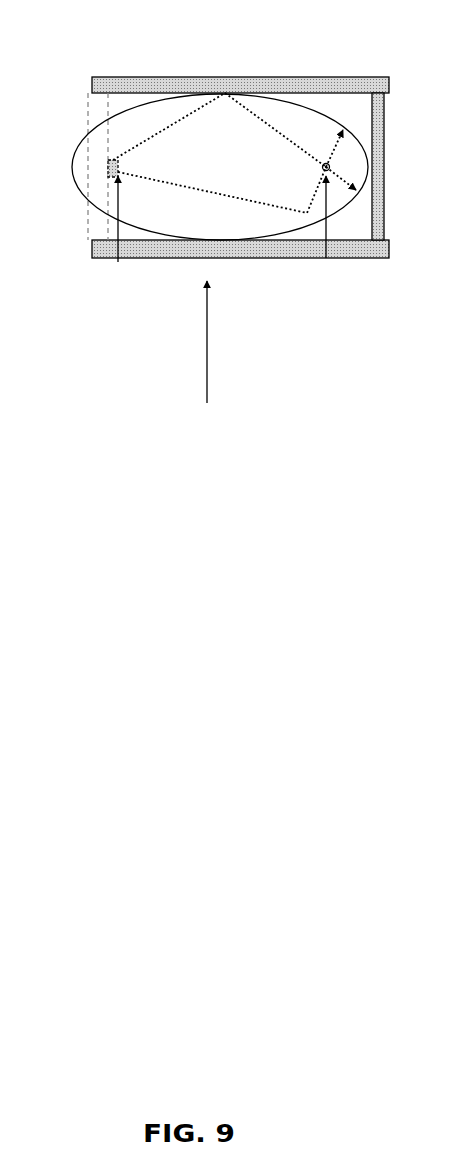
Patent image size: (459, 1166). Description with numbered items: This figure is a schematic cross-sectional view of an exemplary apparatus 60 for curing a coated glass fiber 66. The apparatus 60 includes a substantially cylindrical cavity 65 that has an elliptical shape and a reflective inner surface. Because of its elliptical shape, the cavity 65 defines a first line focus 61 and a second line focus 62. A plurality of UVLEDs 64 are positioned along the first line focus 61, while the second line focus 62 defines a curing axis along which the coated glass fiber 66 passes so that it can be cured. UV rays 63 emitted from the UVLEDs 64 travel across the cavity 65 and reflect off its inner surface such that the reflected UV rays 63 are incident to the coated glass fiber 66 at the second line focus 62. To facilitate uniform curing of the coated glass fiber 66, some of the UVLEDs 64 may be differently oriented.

The apparatus 60 is at (198, 356).
The first line focus 61 is at (107, 233).
The second line focus 62 is at (318, 234).
The UV rays 63 is at (196, 110).
The UVLEDs 64 is at (104, 168).
The cavity 65 is at (308, 228).
The coated glass fiber 66 is at (331, 173).